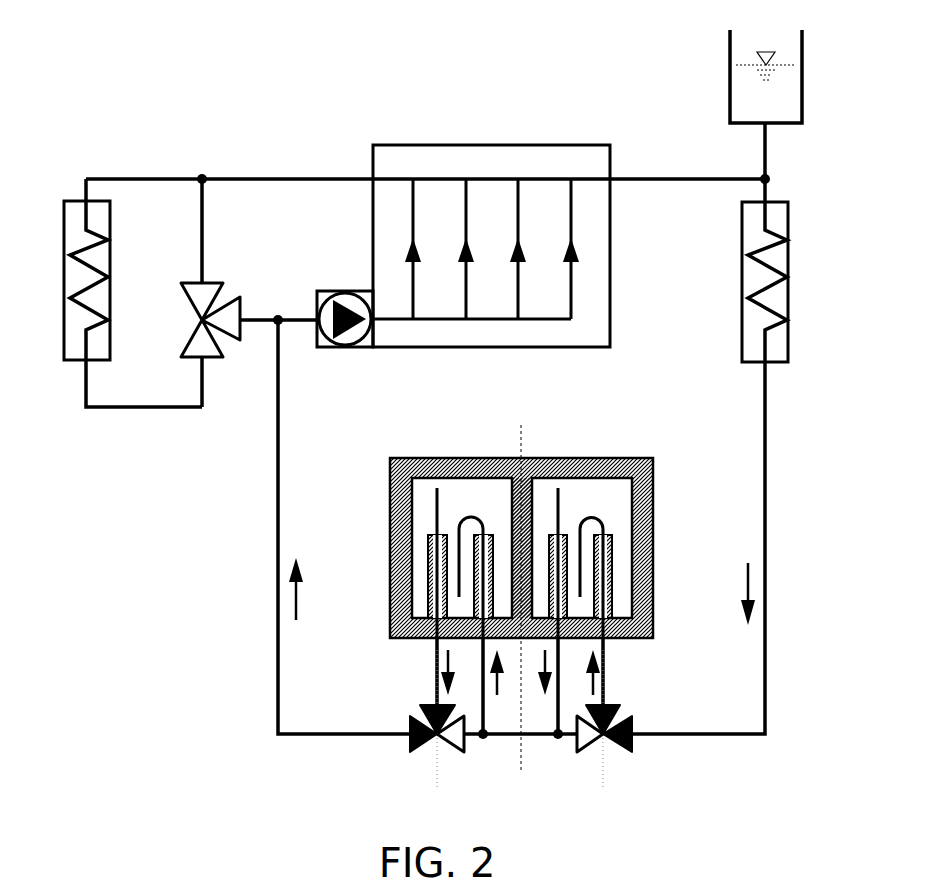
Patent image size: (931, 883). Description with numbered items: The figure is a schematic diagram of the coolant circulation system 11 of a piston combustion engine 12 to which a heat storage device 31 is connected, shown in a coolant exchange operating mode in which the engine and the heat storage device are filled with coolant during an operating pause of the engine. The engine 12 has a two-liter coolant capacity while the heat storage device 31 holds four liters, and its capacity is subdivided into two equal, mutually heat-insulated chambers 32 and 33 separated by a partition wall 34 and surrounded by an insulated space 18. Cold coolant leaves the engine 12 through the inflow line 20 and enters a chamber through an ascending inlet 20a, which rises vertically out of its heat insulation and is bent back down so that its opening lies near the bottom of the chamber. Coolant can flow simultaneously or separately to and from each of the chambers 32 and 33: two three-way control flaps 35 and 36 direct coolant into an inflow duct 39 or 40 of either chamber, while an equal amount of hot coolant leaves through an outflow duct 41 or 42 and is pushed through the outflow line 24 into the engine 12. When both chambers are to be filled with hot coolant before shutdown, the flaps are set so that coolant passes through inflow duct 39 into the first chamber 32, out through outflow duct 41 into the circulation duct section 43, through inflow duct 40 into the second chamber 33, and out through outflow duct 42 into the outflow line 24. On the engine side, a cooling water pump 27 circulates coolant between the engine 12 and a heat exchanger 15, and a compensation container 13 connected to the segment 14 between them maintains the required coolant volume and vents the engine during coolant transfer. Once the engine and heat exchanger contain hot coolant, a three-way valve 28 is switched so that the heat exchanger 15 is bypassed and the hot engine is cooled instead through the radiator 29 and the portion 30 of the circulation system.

The coolant circulation system 11 is at (314, 100).
The piston combustion engine 12 is at (548, 145).
The compensation container 13 is at (806, 86).
The segment 14 is at (666, 179).
The heat exchanger 15 is at (790, 255).
The insulated space 18 is at (404, 466).
The inflow line 20 is at (665, 734).
The inlet 20a is at (592, 522).
The outflow line 24 is at (343, 734).
The cooling water pump 27 is at (330, 291).
The three-way valve 28 is at (186, 340).
The radiator 29 is at (64, 240).
The portion of cooling circulation system 30 is at (325, 179).
The heat storage device 31 is at (544, 564).
The first chamber 32 is at (587, 561).
The second chamber 33 is at (460, 563).
The partition wall 34 is at (522, 488).
The control flap 35 is at (617, 745).
The control flap 36 is at (425, 745).
The inflow duct 39 is at (606, 662).
The inflow duct 40 is at (485, 717).
The outflow duct 41 is at (556, 706).
The outflow duct 42 is at (437, 665).
The circulation duct section 43 is at (505, 738).